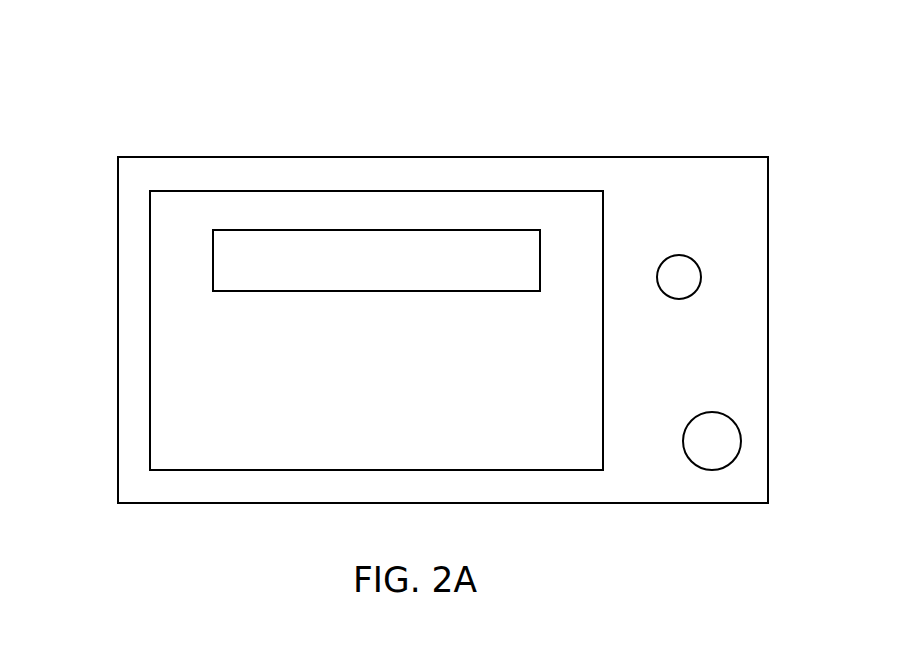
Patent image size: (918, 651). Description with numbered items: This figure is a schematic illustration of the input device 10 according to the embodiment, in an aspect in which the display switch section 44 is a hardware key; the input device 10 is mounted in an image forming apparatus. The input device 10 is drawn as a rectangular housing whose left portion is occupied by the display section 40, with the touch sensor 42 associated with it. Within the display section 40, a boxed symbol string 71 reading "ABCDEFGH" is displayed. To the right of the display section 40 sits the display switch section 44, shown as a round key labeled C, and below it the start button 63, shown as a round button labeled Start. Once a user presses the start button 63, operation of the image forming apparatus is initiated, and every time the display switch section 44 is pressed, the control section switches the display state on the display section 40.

The input device 10 is at (502, 80).
The display section 40 is at (450, 191).
The touch sensor 42 is at (551, 191).
The display switch section 44 is at (686, 255).
The start button 63 is at (714, 470).
The symbol string 71 is at (299, 224).